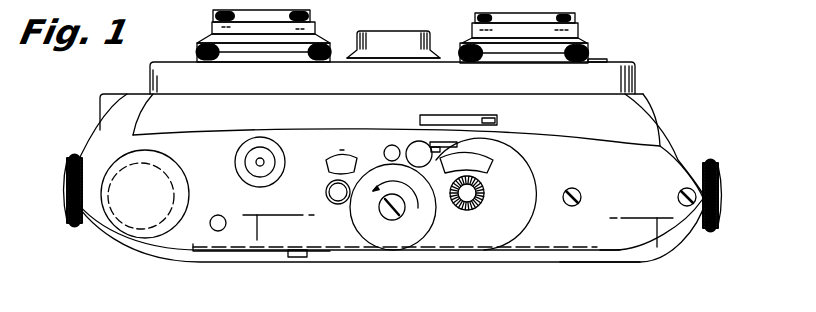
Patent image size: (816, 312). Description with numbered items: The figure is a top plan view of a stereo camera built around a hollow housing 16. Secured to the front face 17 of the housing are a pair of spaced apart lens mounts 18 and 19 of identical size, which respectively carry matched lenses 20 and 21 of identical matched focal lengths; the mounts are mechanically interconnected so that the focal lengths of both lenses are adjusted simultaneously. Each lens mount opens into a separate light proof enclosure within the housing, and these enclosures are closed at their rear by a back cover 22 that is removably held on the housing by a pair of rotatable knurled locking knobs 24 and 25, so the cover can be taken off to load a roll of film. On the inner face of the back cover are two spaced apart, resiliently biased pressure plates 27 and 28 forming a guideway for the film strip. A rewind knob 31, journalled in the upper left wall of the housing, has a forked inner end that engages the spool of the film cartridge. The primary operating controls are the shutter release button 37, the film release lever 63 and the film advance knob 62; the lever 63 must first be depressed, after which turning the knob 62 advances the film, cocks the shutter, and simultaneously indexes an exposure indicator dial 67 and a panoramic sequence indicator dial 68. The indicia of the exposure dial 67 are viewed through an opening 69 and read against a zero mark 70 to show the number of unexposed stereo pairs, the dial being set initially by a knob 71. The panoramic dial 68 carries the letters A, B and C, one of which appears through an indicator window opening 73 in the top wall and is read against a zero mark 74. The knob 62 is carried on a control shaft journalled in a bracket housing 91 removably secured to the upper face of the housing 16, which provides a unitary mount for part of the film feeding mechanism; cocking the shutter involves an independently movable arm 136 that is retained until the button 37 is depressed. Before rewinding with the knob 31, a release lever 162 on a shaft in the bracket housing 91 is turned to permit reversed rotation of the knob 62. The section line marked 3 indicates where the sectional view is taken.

The section line of FIG. 3 is at (458, 231).
The hollow housing 16 is at (670, 147).
The front face 17 is at (448, 58).
The lens mount 18 is at (573, 40).
The lens mount 19 is at (326, 58).
The matched lens 20 is at (555, 29).
The matched lens 21 is at (213, 28).
The back cover 22 is at (677, 248).
The knurled locking knob 24 is at (717, 165).
The knurled locking knob 25 is at (67, 217).
The pressure plate 27 is at (547, 257).
The pressure plate 28 is at (207, 250).
The rewind knob 31 is at (137, 218).
The shutter release button 37 is at (260, 163).
The film advance knob 62 is at (395, 243).
The release lever 63 is at (300, 257).
The exposure indicator dial 67 is at (497, 150).
The panoramic sequence indicator dial 68 is at (330, 157).
The opening 69 is at (490, 168).
The zero mark 70 is at (468, 145).
The knob 71 is at (467, 190).
The indicator window opening 73 is at (322, 172).
The zero mark 74 is at (342, 150).
The bracket housing 91 is at (617, 233).
The arm 136 is at (485, 117).
The release lever 162 is at (440, 143).